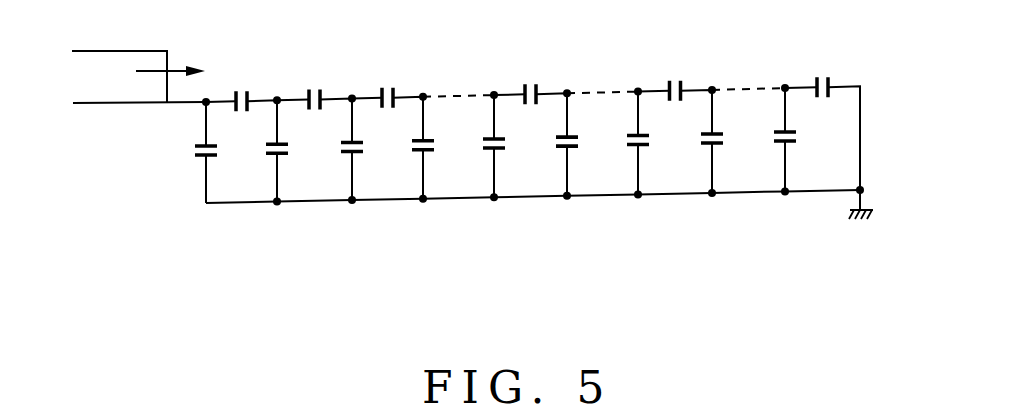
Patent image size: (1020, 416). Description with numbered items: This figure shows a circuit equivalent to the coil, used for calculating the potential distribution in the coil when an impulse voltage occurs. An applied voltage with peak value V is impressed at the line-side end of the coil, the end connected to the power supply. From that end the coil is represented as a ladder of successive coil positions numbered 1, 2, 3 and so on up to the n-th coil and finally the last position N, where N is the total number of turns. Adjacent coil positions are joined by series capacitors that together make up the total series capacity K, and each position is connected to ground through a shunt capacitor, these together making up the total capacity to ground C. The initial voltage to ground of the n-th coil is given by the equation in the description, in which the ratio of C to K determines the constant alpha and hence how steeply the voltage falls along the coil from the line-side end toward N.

The peak value of applied voltage V is at (139, 58).
The first coil 1 is at (247, 137).
The second coil 2 is at (320, 136).
The third coil 3 is at (393, 135).
The n-th coil n is at (464, 133).
The total series capacity K is at (680, 120).
The total number of turns N is at (824, 126).
The total capacity to ground C is at (578, 144).